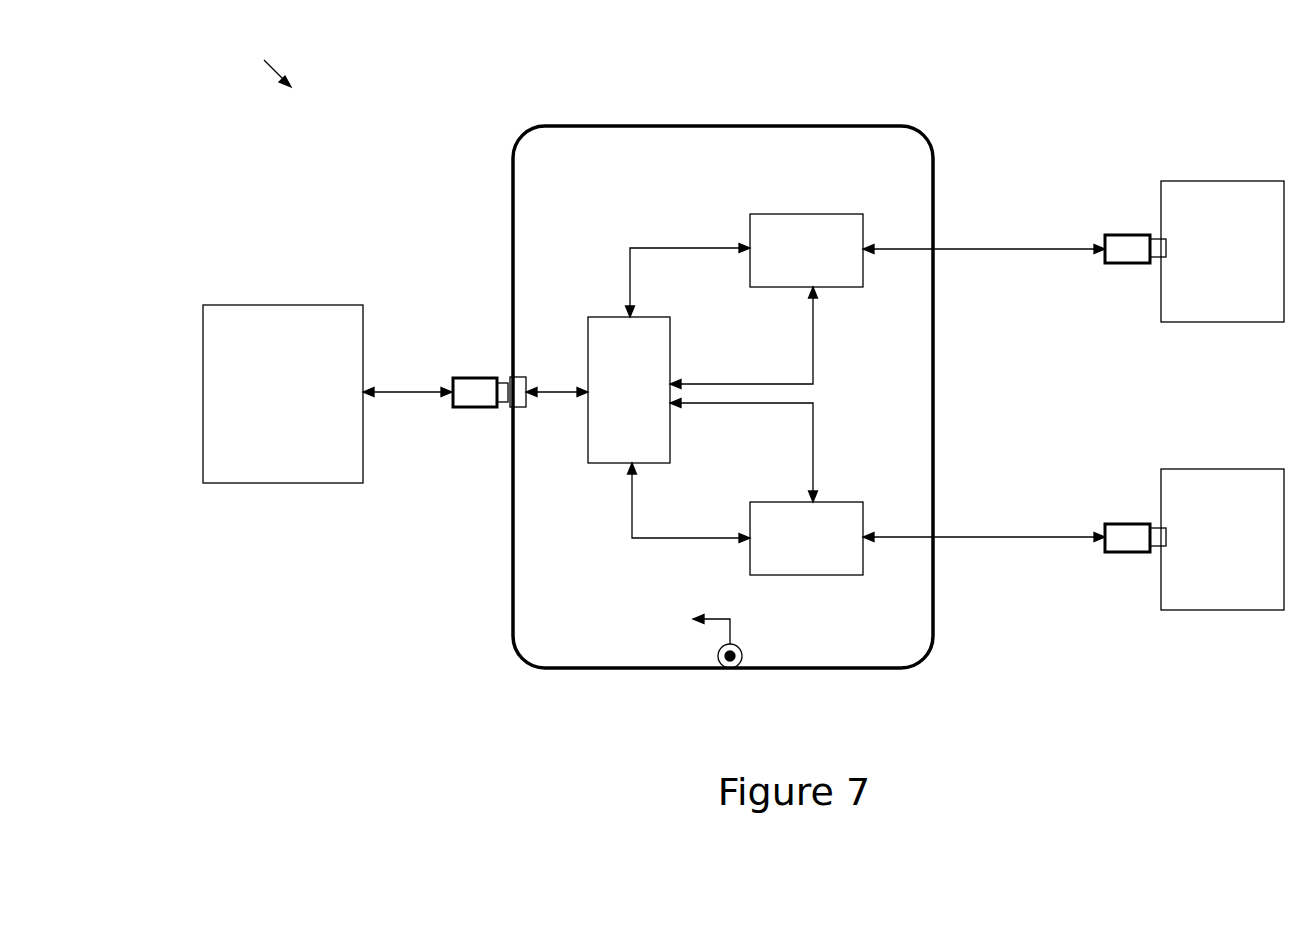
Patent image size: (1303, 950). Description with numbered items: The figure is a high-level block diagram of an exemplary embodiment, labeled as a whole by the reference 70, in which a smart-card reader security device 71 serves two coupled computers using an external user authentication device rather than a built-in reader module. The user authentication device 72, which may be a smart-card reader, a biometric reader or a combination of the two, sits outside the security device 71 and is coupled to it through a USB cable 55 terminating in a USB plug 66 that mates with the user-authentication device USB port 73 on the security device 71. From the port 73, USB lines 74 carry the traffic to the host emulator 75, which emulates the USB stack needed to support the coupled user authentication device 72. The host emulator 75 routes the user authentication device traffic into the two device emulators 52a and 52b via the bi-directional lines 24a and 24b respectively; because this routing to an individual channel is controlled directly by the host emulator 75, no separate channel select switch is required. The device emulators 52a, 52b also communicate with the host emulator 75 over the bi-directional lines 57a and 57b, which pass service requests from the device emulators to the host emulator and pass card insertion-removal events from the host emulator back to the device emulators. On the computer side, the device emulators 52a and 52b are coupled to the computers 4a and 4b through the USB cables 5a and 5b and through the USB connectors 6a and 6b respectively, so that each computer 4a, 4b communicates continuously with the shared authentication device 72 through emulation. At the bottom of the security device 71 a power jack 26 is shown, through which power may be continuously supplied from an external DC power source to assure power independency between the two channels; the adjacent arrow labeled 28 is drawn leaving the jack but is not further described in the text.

The USB emulation system 70 is at (262, 62).
The smart-card reader security device 71 is at (935, 390).
The user authentication device 72 is at (284, 304).
The USB cable 55 is at (402, 389).
The USB plug 66 is at (478, 377).
The user-authentication device USB port 73 is at (521, 409).
The USB lines 74 is at (553, 389).
The host emulator 75 is at (600, 316).
The device emulator 52a is at (805, 213).
The device emulator 52b is at (803, 577).
The bi-directional line 57a is at (700, 246).
The bi-directional line 57b is at (695, 536).
The bi-directional line 24a is at (813, 341).
The bi-directional line 24b is at (813, 425).
The USB cable 5a is at (1022, 247).
The USB cable 5b is at (1022, 535).
The USB connector 6a is at (1132, 234).
The USB connector 6b is at (1132, 523).
The computer 4a is at (1213, 180).
The computer 4b is at (1213, 468).
The switch signal 28 is at (718, 616).
The power jack 26 is at (728, 670).